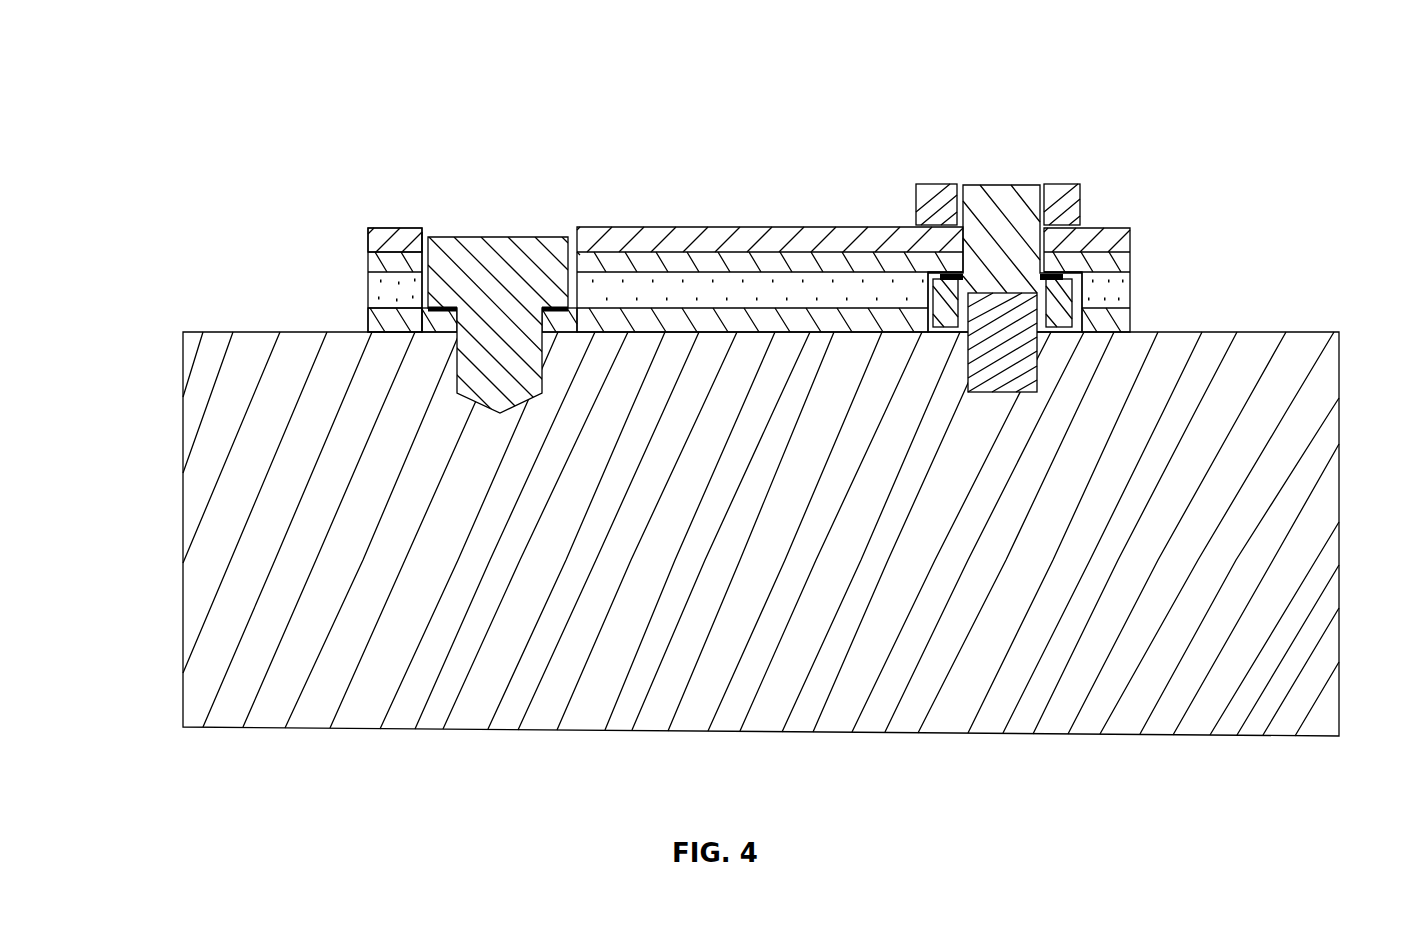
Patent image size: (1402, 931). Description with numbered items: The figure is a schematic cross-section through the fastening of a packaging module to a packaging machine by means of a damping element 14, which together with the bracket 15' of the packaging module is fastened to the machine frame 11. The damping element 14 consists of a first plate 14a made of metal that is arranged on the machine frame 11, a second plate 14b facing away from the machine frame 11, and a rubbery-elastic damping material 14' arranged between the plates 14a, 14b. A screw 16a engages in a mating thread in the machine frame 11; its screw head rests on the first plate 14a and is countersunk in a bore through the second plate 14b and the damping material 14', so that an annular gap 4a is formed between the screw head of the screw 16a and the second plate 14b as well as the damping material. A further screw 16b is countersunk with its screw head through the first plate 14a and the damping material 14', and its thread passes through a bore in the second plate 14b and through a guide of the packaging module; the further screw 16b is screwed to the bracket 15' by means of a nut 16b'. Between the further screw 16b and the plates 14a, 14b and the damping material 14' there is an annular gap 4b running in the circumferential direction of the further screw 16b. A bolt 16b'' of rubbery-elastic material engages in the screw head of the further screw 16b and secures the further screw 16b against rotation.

The machine frame 11 is at (1228, 387).
The damping element 14 is at (1175, 208).
The rubbery-elastic damping material 14' is at (272, 249).
The first plate 14a is at (368, 322).
The second plate 14b is at (370, 253).
The bracket 15' is at (770, 181).
The screw 16a is at (516, 278).
The further screw 16b is at (1031, 169).
The nut 16b' is at (1120, 139).
The bolt 16b'' is at (990, 558).
The annular gap 4a is at (427, 228).
The annular gap 4b is at (966, 172).